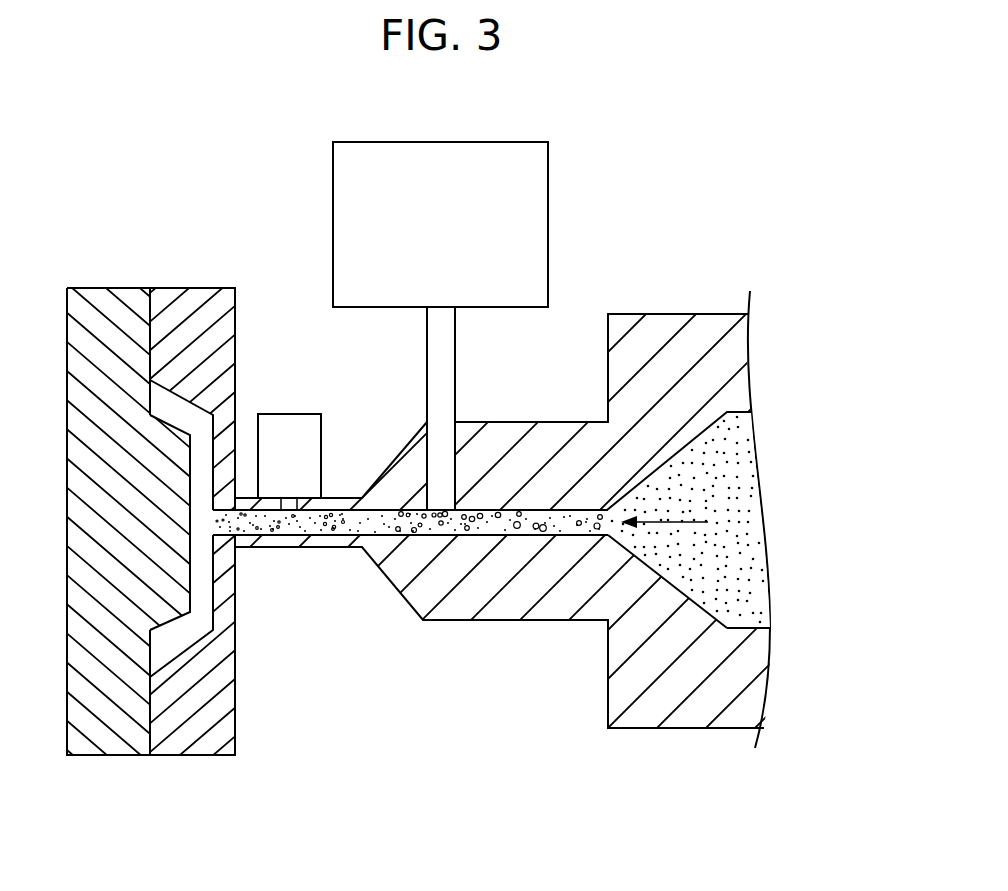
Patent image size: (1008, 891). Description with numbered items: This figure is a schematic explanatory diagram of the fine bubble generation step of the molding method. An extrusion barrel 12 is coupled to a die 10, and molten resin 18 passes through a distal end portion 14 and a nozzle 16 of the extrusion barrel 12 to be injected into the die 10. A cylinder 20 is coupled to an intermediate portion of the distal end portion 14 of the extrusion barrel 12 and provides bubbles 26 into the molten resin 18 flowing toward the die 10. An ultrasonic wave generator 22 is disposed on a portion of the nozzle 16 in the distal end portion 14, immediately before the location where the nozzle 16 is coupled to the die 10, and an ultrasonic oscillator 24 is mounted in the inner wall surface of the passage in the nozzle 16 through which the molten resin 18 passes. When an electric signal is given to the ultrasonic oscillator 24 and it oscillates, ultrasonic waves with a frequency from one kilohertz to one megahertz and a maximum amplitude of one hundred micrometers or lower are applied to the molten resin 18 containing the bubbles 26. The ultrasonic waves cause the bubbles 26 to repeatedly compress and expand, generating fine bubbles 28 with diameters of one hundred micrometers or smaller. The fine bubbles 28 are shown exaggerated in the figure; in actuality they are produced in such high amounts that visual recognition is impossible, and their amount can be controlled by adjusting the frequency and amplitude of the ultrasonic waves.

The die 10 is at (127, 288).
The extrusion barrel 12 is at (707, 314).
The distal end portion 14 is at (502, 620).
The nozzle 16 is at (308, 548).
The molten resin 18 is at (743, 489).
The cylinder 20 is at (515, 212).
The ultrasonic wave generator 22 is at (295, 414).
The ultrasonic oscillator 24 is at (290, 505).
The bubbles 26 is at (380, 538).
The fine bubbles 28 is at (263, 527).